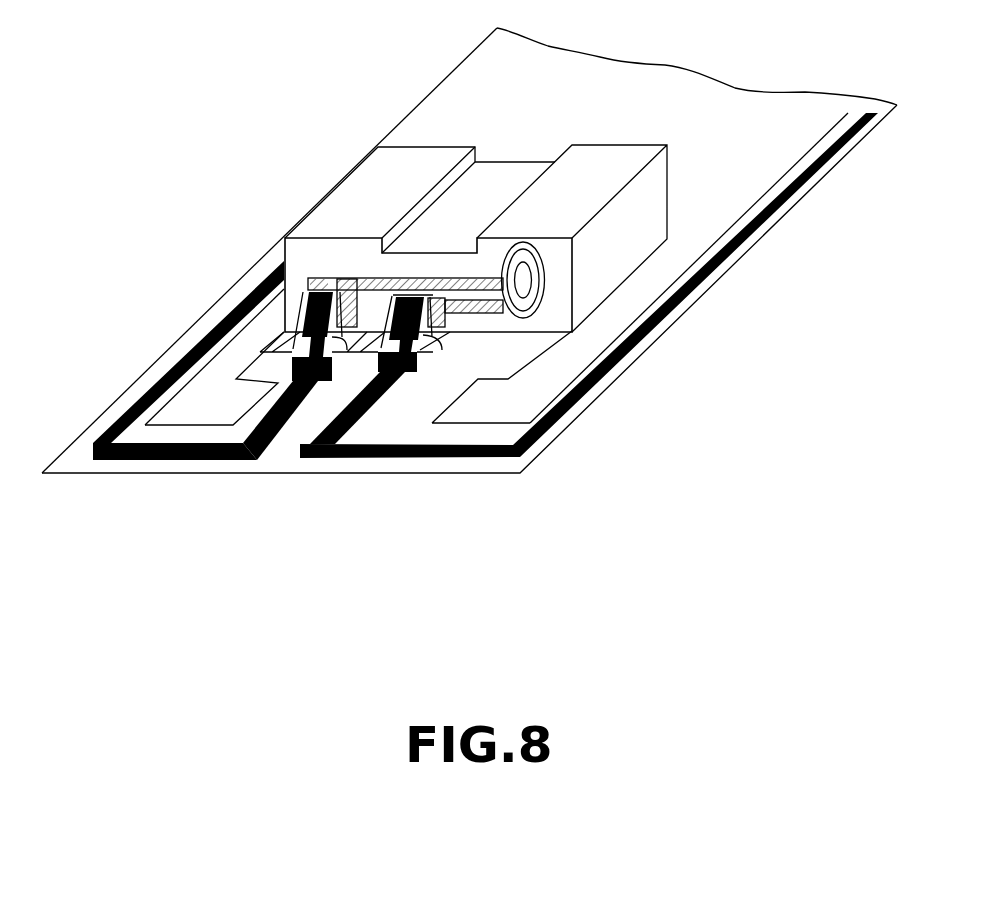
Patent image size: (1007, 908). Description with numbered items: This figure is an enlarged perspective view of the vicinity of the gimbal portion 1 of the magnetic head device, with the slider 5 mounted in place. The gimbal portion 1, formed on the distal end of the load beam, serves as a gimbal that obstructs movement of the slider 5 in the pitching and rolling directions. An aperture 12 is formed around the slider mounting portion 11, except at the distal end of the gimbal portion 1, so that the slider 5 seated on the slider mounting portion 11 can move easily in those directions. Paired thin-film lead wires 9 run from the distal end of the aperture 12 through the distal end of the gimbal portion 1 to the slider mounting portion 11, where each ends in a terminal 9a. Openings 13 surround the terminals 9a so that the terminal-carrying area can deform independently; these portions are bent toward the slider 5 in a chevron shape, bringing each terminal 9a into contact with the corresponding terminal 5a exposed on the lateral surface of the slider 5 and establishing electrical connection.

The gimbal portion 1 is at (703, 311).
The slider 5 is at (350, 164).
The terminal 5a is at (440, 300).
The thin-film lead wire 9 is at (133, 458).
The terminal 9a is at (298, 333).
The slider mounting portion 11 is at (513, 360).
The aperture 12 is at (610, 342).
The opening 13 is at (339, 374).